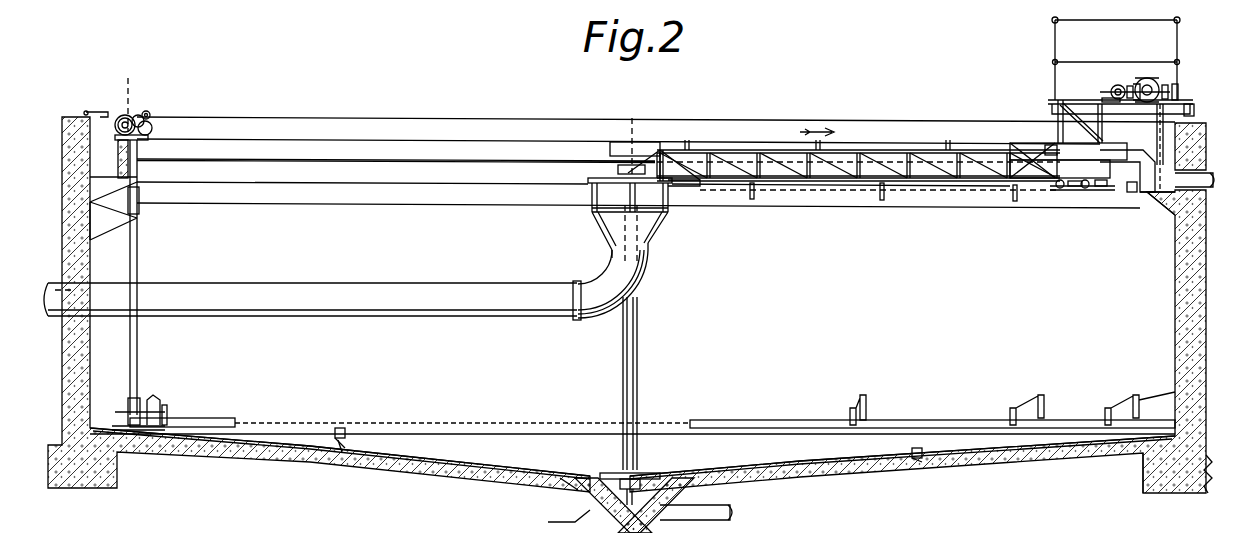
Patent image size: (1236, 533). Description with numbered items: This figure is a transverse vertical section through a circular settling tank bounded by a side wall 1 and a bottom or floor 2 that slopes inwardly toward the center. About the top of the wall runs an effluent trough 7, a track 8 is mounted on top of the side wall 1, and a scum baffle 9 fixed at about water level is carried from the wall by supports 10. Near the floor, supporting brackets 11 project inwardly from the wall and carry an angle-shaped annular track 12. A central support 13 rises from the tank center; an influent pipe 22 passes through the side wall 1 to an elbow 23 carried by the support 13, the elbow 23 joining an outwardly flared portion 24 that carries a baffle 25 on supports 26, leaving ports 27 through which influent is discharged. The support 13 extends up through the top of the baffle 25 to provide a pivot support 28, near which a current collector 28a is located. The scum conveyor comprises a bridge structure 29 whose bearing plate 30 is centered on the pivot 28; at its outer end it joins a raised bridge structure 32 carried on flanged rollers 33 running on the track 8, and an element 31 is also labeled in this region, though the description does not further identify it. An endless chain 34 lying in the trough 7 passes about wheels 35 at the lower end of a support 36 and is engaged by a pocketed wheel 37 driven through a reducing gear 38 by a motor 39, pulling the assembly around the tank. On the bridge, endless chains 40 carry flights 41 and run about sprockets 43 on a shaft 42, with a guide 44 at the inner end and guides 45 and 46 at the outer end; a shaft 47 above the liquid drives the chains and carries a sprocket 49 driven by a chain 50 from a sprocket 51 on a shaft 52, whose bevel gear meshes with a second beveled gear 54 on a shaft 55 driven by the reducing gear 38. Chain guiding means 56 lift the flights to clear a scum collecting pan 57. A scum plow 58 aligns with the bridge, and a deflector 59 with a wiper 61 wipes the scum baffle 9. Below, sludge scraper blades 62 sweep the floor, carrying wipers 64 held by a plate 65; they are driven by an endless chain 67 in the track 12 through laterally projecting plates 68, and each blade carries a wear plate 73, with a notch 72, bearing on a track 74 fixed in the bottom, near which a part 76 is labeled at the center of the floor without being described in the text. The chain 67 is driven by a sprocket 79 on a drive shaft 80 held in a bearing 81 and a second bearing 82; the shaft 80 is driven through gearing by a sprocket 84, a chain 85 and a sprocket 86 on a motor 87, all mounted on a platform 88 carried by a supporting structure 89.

The side wall 1 is at (66, 358).
The bottom or floor 2 is at (272, 462).
The effluent trough 7 is at (95, 163).
The track 8 is at (88, 112).
The scum baffle 9 is at (143, 152).
The supports 10 is at (1132, 192).
The supporting brackets 11 is at (120, 400).
The annular track 12 is at (208, 418).
The support 13 is at (640, 340).
The influent pipe 22 is at (275, 296).
The elbow 23 is at (648, 275).
The outwardly flared portion 24 is at (604, 233).
The baffle 25 is at (590, 179).
The supports 26 is at (592, 199).
The ports 27 is at (597, 208).
The pivot support 28 is at (632, 155).
The current collector 28a is at (647, 152).
The bridge structure 29 is at (932, 182).
The bearing plate 30 is at (610, 178).
The platform support 31 is at (1056, 113).
The raised bridge structure 32 is at (1062, 103).
The flanged rollers 33 is at (1190, 105).
The endless chain 34 is at (1160, 200).
The wheels 35 is at (1145, 192).
The support 36 is at (1160, 136).
The pocketed wheel 37 is at (1178, 90).
The reducing gear 38 is at (1147, 78).
The motor 39 is at (1160, 88).
The endless chains 40 is at (813, 192).
The flights 41 is at (752, 200).
The shaft 42 is at (668, 150).
The sprockets 43 is at (668, 162).
The guide 44 is at (672, 165).
The guide 45 is at (1058, 188).
The second guide 46 is at (1085, 188).
The shaft 47 is at (1100, 148).
The sprocket 49 is at (1100, 140).
The chain 50 is at (1108, 98).
The sprocket 51 is at (1112, 90).
The shaft 52 is at (1116, 85).
The second beveled gear 54 is at (1129, 86).
The shaft 55 is at (1136, 84).
The chain guiding means 56 is at (1052, 150).
The scum collecting pan 57 is at (1075, 186).
The scum plow 58 is at (770, 148).
The deflector 59 is at (1100, 186).
The wiper 61 is at (1112, 180).
The sludge scrapers or collector blades 62 is at (500, 462).
The wipers 64 is at (1170, 494).
The plate 65 is at (1143, 470).
The endless chain 67 is at (545, 421).
The laterally projecting plates 68 is at (130, 408).
The notch or recess 72 is at (342, 428).
The wear plate 73 is at (336, 448).
The track 74 is at (340, 455).
The sump pipe 76 is at (556, 520).
The sprocket 79 is at (150, 432).
The drive shaft 80 is at (138, 340).
The bearing 81 is at (148, 400).
The second bearing 82 is at (140, 214).
The sprocket 84 is at (150, 113).
The chain 85 is at (136, 115).
The sprocket 86 is at (130, 93).
The motor 87 is at (120, 115).
The platform 88 is at (152, 127).
The supporting structure 89 is at (150, 137).